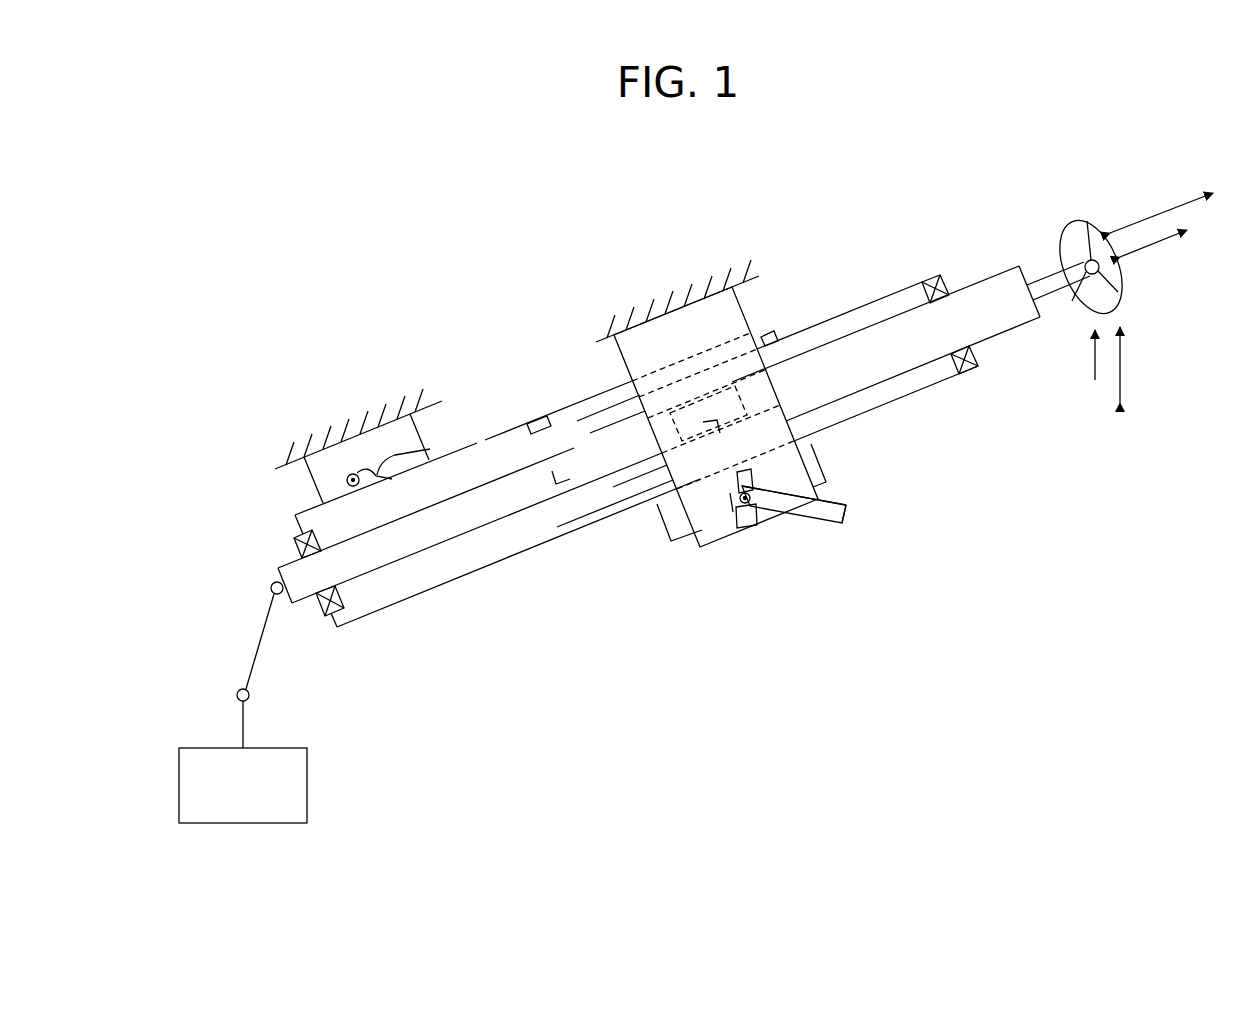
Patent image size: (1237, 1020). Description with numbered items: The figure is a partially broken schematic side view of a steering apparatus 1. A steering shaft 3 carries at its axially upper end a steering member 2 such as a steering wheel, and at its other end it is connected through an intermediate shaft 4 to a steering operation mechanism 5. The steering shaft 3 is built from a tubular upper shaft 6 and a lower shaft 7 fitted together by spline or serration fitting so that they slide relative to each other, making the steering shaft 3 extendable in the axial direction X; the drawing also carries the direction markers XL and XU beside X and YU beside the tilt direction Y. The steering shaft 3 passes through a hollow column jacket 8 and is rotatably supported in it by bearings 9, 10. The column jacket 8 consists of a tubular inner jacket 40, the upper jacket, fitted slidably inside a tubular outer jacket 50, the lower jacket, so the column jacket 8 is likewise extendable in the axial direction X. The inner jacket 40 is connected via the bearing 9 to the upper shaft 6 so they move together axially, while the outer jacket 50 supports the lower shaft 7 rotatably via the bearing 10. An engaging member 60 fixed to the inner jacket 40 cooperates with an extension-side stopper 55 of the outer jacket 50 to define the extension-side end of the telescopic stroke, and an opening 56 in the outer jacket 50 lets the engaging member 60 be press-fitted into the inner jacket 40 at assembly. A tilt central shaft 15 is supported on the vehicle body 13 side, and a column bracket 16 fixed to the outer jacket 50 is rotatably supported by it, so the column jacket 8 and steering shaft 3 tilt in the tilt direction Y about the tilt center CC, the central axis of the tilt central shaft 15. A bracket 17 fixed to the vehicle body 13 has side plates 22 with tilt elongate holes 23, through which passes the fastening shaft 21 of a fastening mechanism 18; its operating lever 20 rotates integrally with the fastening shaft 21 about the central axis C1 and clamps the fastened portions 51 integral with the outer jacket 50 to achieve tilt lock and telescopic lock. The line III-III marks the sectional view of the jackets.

The steering apparatus 1 is at (466, 296).
The steering member 2 is at (1077, 222).
The steering shaft 3 is at (1043, 283).
The intermediate shaft 4 is at (258, 638).
The steering operation mechanism 5 is at (308, 772).
The upper shaft 6 is at (1011, 332).
The lower shaft 7 is at (408, 560).
The column jacket 8 is at (860, 298).
The bearing 9 is at (968, 368).
The bearing 10 is at (322, 615).
The vehicle body 13 is at (393, 394).
The tilt central shaft 15 is at (346, 481).
The column bracket 16 is at (416, 451).
The bracket 17 is at (398, 435).
The fastening mechanism 18 is at (863, 495).
The operating lever 20 is at (848, 508).
The fastening shaft 21 is at (729, 520).
The side plate 22 is at (696, 550).
The tilt elongate hole 23 is at (752, 527).
The inner jacket 40 is at (578, 421).
The outer jacket 50 is at (500, 568).
The fastened portion 51 is at (665, 522).
The extension-side stopper 55 is at (765, 333).
The opening 56 is at (475, 441).
The engaging member 60 is at (534, 424).
The central axis C1 is at (800, 477).
The tilt center CC is at (352, 473).
The axial direction X is at (1157, 248).
The column lower direction XL is at (1142, 216).
The column upper direction XU is at (1184, 197).
The tilt direction Y is at (1127, 363).
The tilt upward direction YU is at (1093, 357).
The section line III- III is at (497, 318).